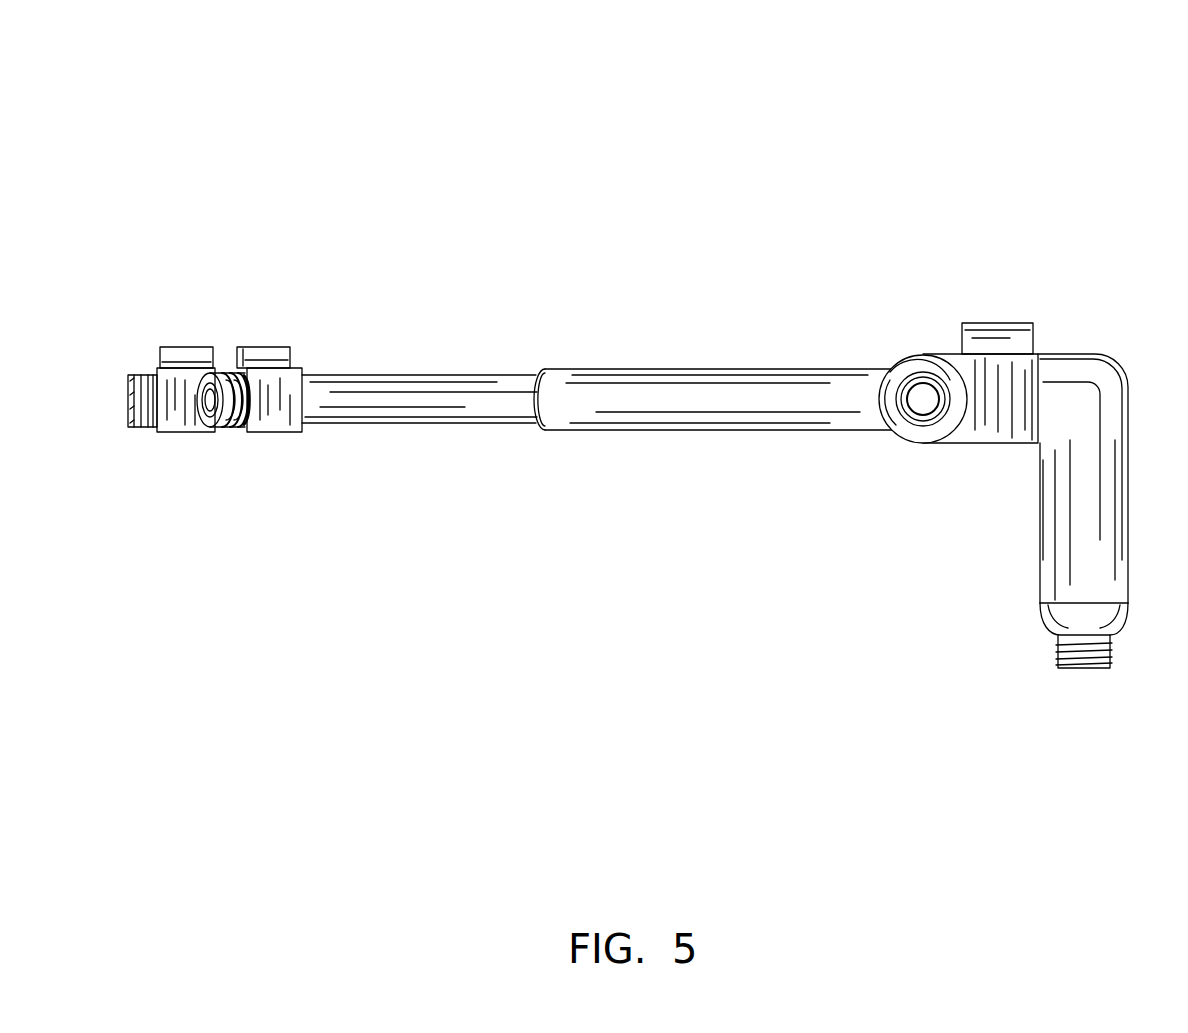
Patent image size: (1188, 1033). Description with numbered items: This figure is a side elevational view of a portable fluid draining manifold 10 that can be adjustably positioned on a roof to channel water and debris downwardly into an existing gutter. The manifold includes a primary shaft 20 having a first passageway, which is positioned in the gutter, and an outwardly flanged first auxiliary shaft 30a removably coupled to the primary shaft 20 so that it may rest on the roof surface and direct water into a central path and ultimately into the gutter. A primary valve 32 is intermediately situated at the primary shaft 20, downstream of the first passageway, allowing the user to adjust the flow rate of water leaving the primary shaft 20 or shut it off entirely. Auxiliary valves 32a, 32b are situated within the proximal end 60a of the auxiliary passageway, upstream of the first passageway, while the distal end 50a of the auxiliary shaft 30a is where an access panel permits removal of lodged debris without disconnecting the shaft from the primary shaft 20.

The portable fluid draining manifold 10 is at (386, 176).
The primary shaft 20 is at (903, 375).
The first auxiliary shaft 30a is at (718, 400).
The primary valve 32 is at (997, 323).
The first auxiliary valve 32a is at (260, 347).
The second auxiliary valve 32b is at (183, 347).
The distal end 50a is at (211, 406).
The proximal end 60a is at (127, 401).